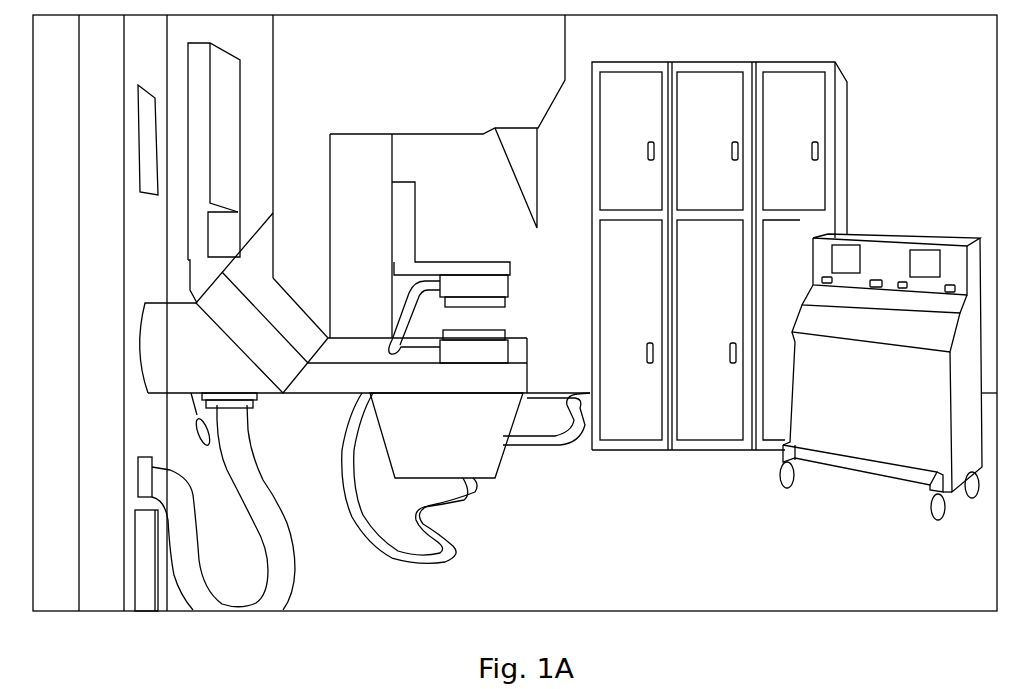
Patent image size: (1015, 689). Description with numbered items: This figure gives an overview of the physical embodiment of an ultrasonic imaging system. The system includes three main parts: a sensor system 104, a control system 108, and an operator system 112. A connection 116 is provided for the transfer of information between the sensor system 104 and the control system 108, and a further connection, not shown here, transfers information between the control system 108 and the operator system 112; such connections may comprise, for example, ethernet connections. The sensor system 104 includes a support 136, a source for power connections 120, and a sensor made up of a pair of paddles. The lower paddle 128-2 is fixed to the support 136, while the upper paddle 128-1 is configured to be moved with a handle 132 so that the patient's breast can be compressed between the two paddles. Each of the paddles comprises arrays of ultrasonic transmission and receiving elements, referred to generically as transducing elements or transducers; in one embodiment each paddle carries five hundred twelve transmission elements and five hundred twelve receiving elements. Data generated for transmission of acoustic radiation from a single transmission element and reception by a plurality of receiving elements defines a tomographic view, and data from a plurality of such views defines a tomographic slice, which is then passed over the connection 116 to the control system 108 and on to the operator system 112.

The sensor system 104 is at (369, 214).
The control system 108 is at (678, 62).
The operator system 112 is at (910, 235).
The connection 116 is at (478, 503).
The source for power connections 120 is at (295, 560).
The upper paddle 128-1 is at (508, 290).
The lower paddle 128-2 is at (508, 358).
The handle 132 is at (415, 233).
The support 136 is at (317, 394).